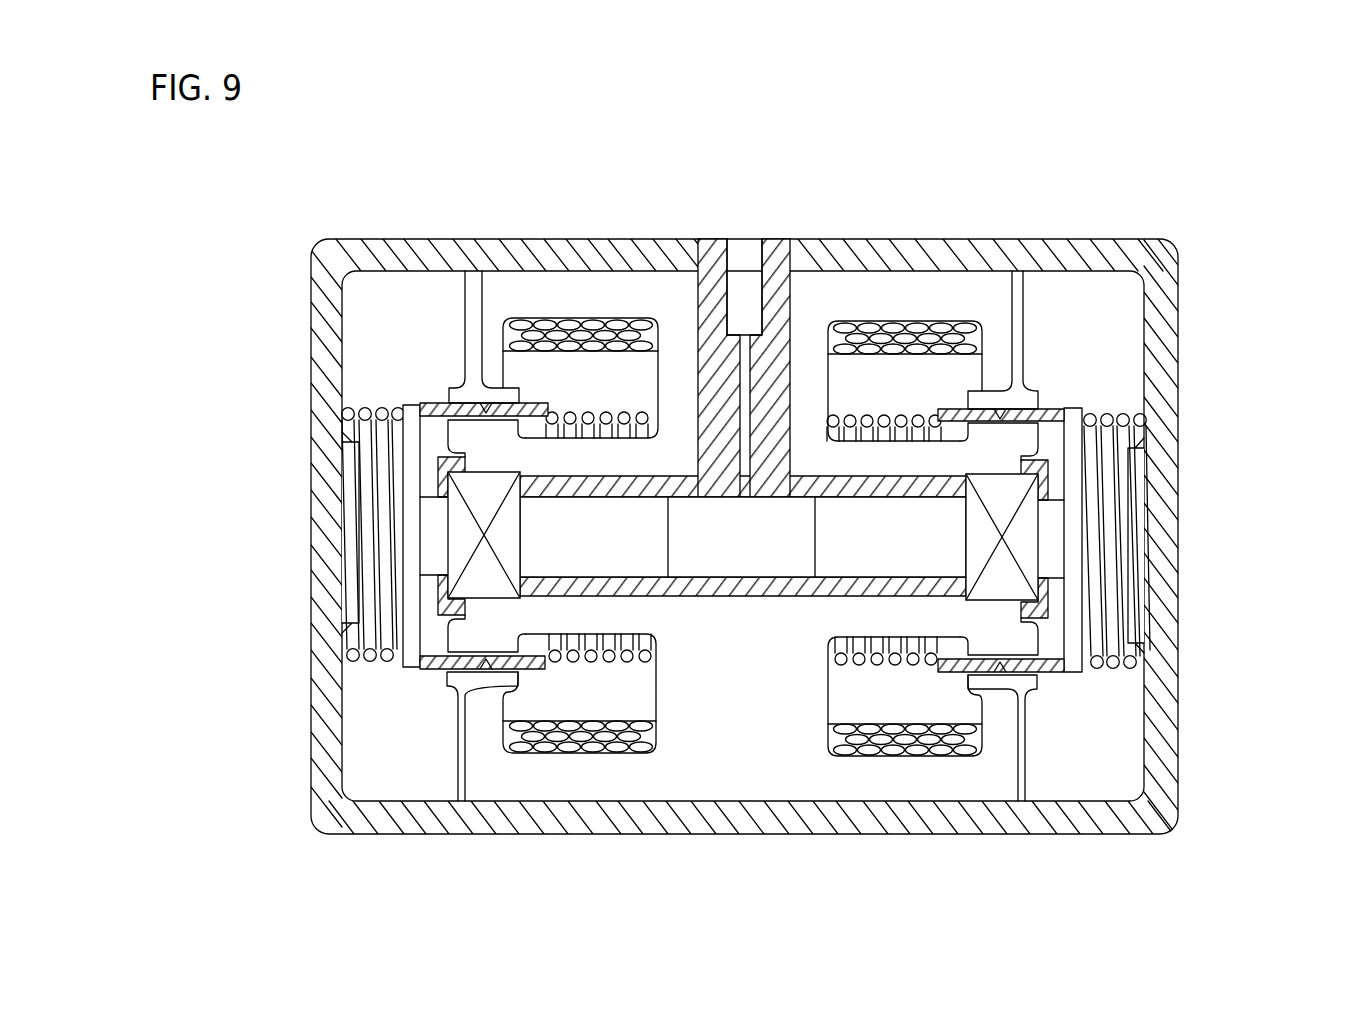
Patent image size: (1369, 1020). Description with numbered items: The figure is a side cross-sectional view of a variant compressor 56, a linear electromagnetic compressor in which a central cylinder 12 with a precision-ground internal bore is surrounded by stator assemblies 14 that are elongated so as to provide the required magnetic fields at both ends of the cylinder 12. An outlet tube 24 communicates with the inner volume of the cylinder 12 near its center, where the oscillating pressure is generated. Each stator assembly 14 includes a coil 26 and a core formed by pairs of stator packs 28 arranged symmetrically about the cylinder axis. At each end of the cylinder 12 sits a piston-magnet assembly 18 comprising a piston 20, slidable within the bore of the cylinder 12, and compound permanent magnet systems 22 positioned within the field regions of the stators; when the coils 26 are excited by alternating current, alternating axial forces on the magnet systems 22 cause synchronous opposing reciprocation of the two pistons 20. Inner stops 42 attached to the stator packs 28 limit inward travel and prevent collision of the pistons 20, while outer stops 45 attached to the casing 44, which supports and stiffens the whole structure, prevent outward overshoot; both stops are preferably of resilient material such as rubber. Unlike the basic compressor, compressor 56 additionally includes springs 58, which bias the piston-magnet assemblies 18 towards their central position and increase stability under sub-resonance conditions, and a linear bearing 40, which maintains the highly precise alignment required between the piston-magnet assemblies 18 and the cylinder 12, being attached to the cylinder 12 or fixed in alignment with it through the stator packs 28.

The cylinder 12 is at (772, 465).
The stator assembly 14 is at (749, 490).
The piston-magnet assembly 18 is at (400, 398).
The piston 20 is at (656, 530).
The compound permanent magnet system 22 is at (497, 403).
The outlet tube 24 is at (747, 277).
The coil 26 is at (973, 738).
The stator pack 28 is at (1003, 773).
The linear bearing 40 is at (460, 537).
The inner stop 42 is at (1048, 477).
The casing 44 is at (322, 270).
The outer stop 45 is at (1143, 638).
The compressor 56 is at (1228, 197).
The spring 58 is at (913, 418).